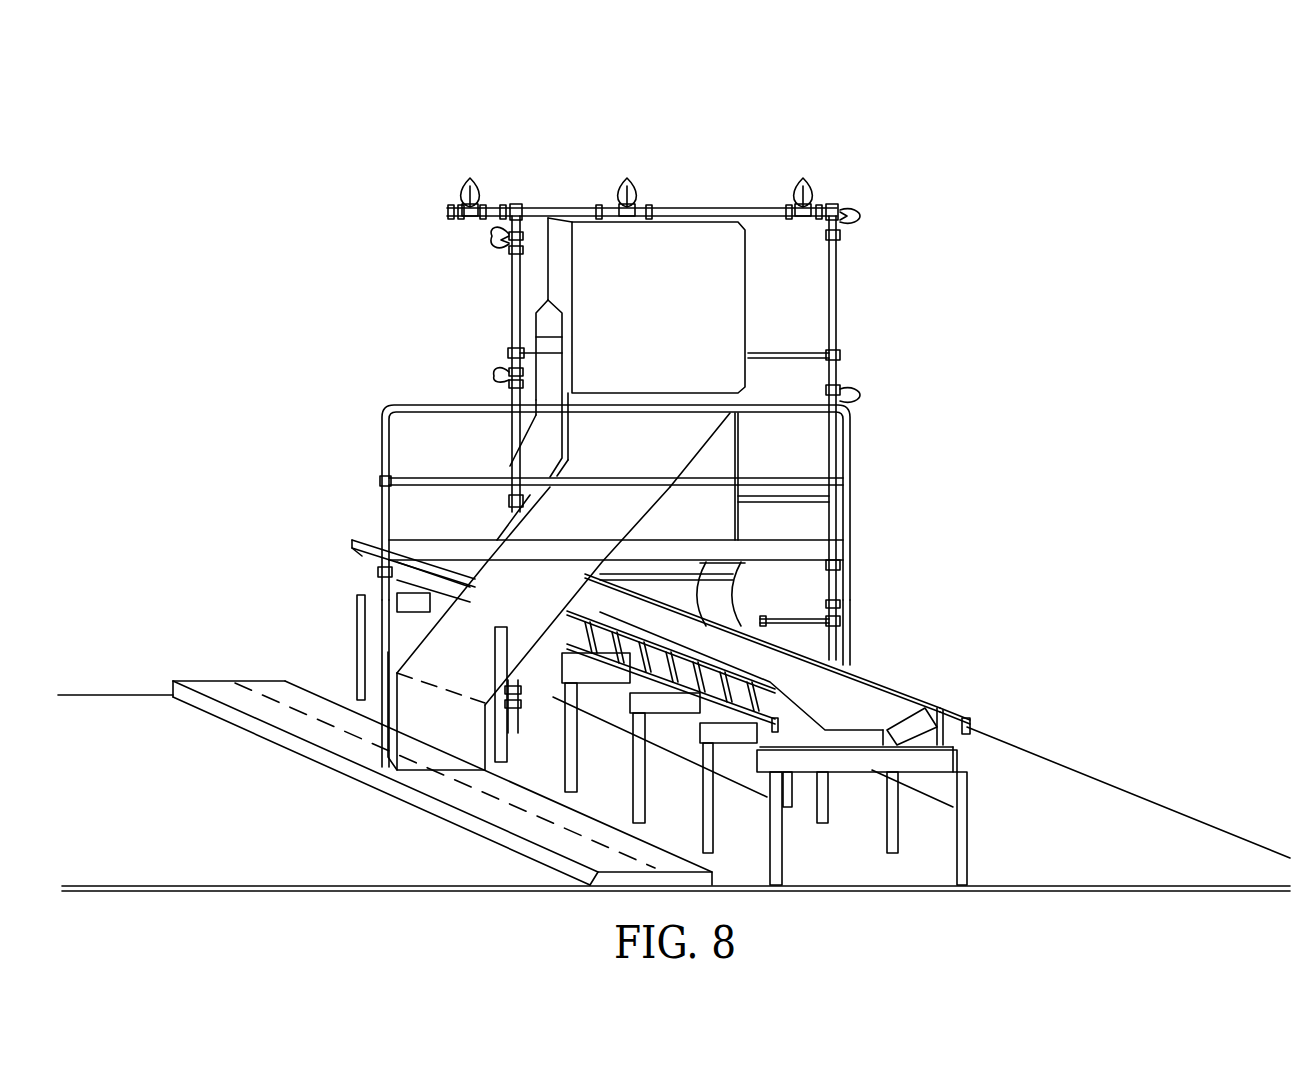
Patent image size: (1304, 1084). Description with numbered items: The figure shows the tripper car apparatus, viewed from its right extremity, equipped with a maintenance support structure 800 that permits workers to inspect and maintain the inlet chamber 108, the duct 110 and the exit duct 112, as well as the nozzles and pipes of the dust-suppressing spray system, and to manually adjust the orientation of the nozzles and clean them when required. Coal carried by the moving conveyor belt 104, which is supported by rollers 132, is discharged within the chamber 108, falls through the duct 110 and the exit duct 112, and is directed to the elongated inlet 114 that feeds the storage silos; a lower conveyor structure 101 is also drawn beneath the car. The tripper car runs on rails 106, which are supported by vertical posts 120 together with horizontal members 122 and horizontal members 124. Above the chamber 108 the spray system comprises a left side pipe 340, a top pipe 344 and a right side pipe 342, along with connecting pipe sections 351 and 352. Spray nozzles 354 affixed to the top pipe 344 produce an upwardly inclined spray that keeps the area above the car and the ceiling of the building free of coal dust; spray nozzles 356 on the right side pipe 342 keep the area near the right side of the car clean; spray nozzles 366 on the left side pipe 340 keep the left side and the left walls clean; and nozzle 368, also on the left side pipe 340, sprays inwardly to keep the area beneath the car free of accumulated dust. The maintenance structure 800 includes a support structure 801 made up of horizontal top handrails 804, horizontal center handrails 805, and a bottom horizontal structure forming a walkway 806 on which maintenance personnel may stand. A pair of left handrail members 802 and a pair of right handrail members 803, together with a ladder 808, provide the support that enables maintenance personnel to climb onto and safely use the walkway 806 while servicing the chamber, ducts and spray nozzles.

The maintenance support structure 800 is at (636, 84).
The support structure 801 is at (358, 400).
The left handrail members 802 is at (382, 450).
The right handrail members 803 is at (850, 456).
The horizontal top handrails 804 is at (605, 418).
The horizontal center handrails 805 is at (790, 472).
The walkway 806 is at (556, 538).
The ladder 808 is at (380, 573).
The conveyor 101 is at (300, 705).
The conveyor belt 104 is at (845, 720).
The rails 106 is at (355, 553).
The inlet chamber 108 is at (636, 312).
The duct 110 is at (484, 618).
The exit duct 112 is at (413, 736).
The elongated inlet 114 is at (485, 808).
The vertical posts 120 is at (357, 645).
The horizontal members 122 is at (600, 718).
The horizontal members 124 is at (848, 778).
The rollers 132 is at (795, 712).
The left side pipe 340 is at (836, 288).
The right side pipe 342 is at (512, 295).
The top pipe 344 is at (558, 212).
The pipe 351 is at (775, 355).
The pipe 352 is at (780, 500).
The spray nozzles 354 is at (470, 178).
The spray nozzles 356 is at (490, 237).
The spray nozzles 366 is at (860, 216).
The spray nozzle 368 is at (765, 620).